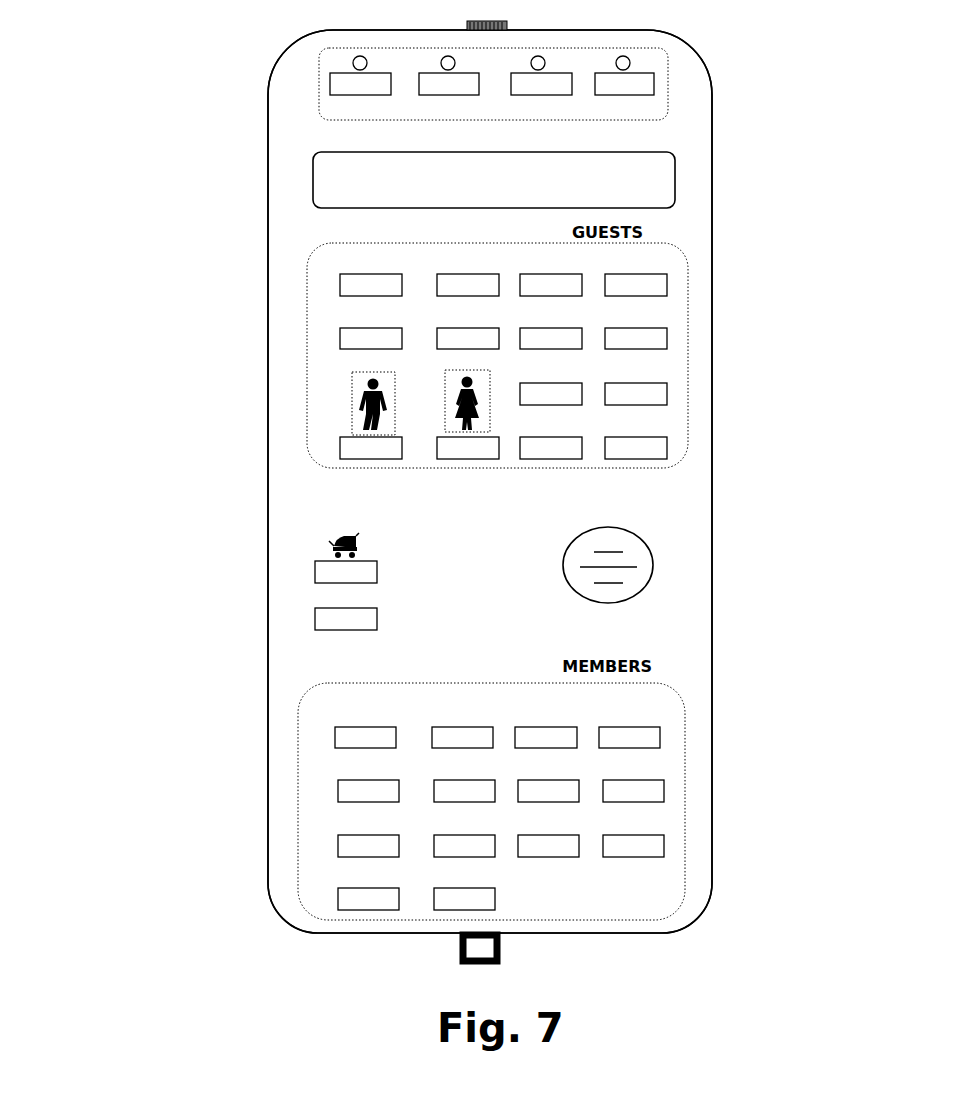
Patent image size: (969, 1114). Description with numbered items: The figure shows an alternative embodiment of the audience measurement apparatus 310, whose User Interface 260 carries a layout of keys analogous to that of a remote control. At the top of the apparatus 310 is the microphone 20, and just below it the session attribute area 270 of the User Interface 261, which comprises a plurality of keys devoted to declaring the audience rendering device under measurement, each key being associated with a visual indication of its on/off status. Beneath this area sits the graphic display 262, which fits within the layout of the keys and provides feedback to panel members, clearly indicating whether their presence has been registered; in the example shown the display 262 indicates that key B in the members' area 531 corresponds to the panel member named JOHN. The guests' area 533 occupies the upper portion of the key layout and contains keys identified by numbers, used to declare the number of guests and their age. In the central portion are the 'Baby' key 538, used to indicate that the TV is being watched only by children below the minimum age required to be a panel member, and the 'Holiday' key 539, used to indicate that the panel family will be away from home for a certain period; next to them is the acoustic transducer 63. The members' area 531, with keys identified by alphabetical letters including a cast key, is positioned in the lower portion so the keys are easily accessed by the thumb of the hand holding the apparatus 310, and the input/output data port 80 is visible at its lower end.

The microphone 20 is at (468, 21).
The session attribute area 270 is at (320, 70).
The User Interface 260 is at (268, 192).
The graphic display 262 is at (675, 169).
The guests' area 533 is at (306, 265).
The User Interface 261 is at (674, 469).
The apparatus 310 is at (240, 490).
The 'Baby' key 538 is at (340, 578).
The 'Holiday' key 539 is at (350, 620).
The acoustic transducer 63 is at (654, 564).
The members' area 531 is at (300, 745).
The input/output data port 80 is at (480, 943).